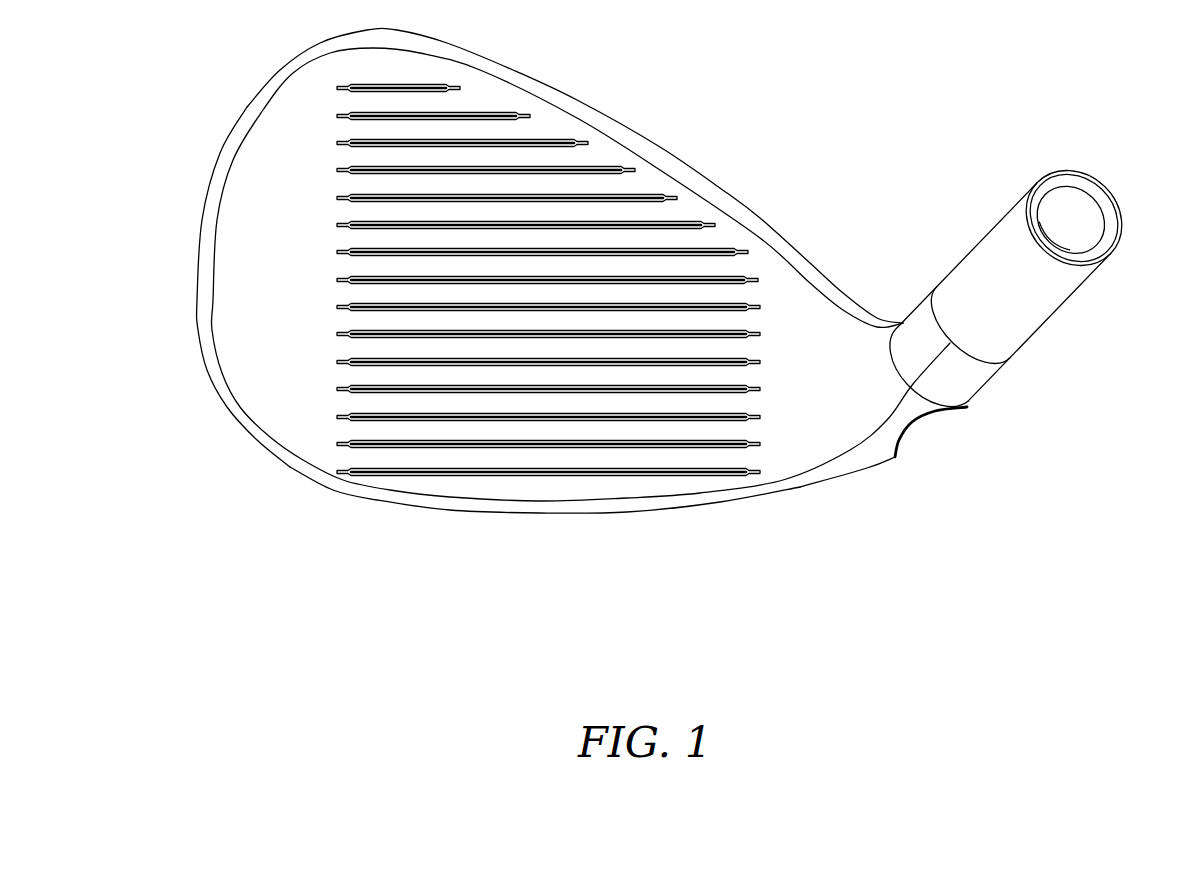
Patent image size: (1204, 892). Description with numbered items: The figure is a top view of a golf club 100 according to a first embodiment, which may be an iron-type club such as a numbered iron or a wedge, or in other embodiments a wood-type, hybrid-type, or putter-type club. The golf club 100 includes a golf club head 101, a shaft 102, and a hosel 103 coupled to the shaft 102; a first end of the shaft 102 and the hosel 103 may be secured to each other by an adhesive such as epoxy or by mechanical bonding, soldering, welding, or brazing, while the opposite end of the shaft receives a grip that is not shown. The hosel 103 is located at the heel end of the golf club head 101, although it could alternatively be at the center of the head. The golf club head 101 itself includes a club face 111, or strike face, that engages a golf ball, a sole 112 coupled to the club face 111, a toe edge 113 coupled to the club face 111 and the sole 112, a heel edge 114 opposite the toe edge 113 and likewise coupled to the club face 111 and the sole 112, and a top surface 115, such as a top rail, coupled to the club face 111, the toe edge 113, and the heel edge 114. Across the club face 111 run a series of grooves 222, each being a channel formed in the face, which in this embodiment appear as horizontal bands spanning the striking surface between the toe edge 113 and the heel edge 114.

The golf club 100 is at (676, 329).
The golf club head 101 is at (654, 303).
The shaft 102 is at (1100, 268).
The hosel 103 is at (909, 435).
The club face 111 is at (560, 125).
The sole 112 is at (631, 532).
The toe edge 113 is at (270, 437).
The heel edge 114 is at (865, 470).
The top surface 115 is at (683, 160).
The groove 222 is at (778, 479).